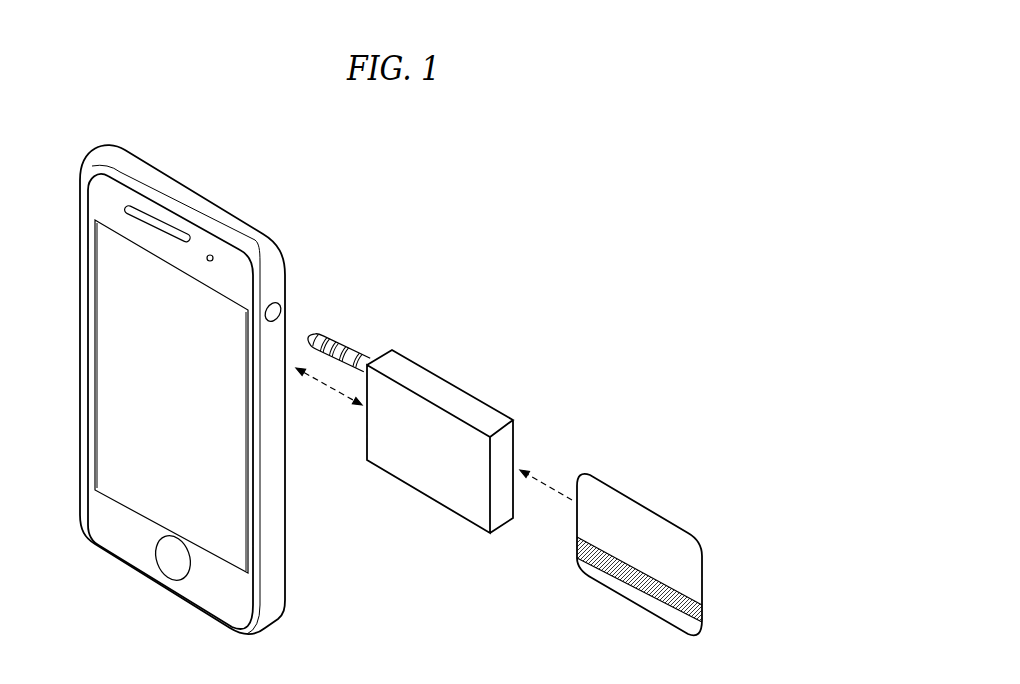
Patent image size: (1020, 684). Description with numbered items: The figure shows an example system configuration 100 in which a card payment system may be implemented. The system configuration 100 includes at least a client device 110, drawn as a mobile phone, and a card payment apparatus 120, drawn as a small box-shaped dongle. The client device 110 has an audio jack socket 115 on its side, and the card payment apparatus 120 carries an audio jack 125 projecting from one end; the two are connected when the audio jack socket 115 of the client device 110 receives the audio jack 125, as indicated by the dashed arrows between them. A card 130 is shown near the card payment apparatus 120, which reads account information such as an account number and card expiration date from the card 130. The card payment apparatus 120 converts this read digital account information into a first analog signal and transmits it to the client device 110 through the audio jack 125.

The system configuration 100 is at (397, 130).
The client device 110 is at (193, 190).
The audio jack socket 115 is at (276, 305).
The card payment apparatus 120 is at (450, 385).
The audio jack 125 is at (345, 342).
The card 130 is at (638, 504).